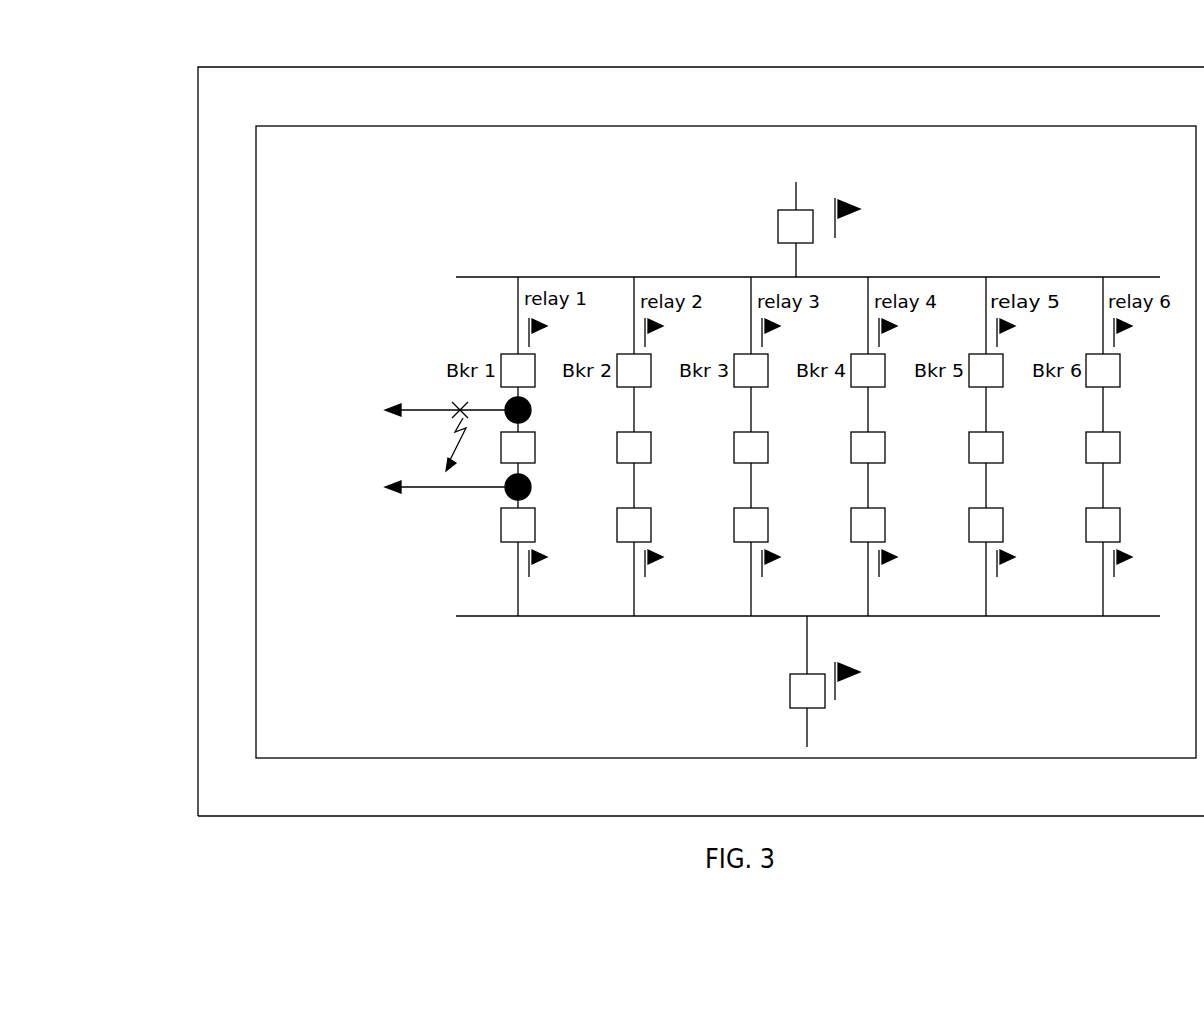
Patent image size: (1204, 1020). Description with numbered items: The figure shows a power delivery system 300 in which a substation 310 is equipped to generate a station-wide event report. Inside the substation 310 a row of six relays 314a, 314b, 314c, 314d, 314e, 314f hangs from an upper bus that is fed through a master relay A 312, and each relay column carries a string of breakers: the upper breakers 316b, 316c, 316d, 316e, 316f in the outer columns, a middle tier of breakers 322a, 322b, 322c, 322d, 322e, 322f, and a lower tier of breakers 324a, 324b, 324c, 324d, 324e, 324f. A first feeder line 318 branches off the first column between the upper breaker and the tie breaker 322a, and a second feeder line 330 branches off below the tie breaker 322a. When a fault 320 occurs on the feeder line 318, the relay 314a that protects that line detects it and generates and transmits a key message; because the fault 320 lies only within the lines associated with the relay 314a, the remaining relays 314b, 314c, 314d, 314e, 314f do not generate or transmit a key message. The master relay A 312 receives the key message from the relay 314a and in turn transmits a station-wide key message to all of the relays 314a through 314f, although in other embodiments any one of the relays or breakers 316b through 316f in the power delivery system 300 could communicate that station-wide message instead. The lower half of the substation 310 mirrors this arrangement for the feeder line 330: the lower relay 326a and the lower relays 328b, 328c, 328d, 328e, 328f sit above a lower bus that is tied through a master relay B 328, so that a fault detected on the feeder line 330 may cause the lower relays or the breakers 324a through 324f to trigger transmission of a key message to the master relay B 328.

The power delivery system 300 is at (197, 56).
The substation 310 is at (331, 153).
The master relay A 312 is at (961, 160).
The relay 314a is at (512, 331).
The relay 314b is at (626, 332).
The relay 314c is at (743, 332).
The relay 314d is at (860, 332).
The relay 314e is at (978, 332).
The relay 314f is at (1095, 332).
The breaker 316b is at (614, 375).
The breaker 316c is at (731, 375).
The breaker 316d is at (848, 375).
The breaker 316e is at (966, 375).
The breaker 316f is at (1083, 375).
The feeder line 318 is at (313, 393).
The fault 320 is at (425, 417).
The tie breaker 1 322a is at (497, 448).
The tie breaker 2 322b is at (611, 453).
The tie breaker 3 322c is at (728, 453).
The tie breaker 4 322d is at (845, 453).
The tie breaker 5 322e is at (963, 453).
The tie breaker 6 322f is at (1080, 453).
The breaker 324a is at (494, 522).
The breaker 324b is at (610, 527).
The breaker 324c is at (727, 527).
The breaker 324d is at (844, 527).
The breaker 324e is at (962, 527).
The breaker 324f is at (1079, 527).
The relay 326a is at (513, 578).
The master relay B 328 is at (912, 700).
The lower relay 2 328b is at (625, 573).
The lower relay 3 328c is at (742, 573).
The lower relay 4 328d is at (859, 573).
The lower relay 5 328e is at (977, 573).
The lower relay 6 328f is at (1094, 573).
The feeder line 330 is at (316, 510).